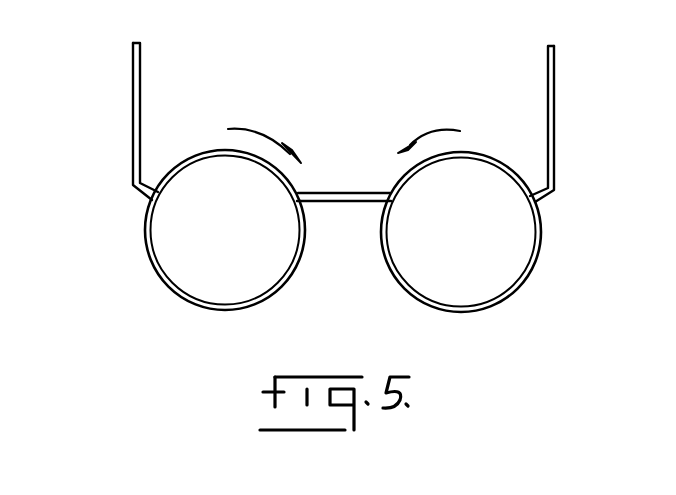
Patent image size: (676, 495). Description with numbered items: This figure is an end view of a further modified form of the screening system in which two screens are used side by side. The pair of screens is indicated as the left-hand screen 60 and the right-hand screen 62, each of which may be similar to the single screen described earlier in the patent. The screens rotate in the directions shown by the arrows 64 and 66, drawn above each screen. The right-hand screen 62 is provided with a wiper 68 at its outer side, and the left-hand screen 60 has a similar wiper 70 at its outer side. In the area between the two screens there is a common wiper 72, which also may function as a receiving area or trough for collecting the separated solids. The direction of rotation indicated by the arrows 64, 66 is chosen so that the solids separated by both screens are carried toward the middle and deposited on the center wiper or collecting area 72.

The left-hand screen 60 is at (205, 310).
The right-hand screen 62 is at (490, 308).
The arrow 64 is at (252, 130).
The arrow 66 is at (438, 131).
The wiper 68 is at (554, 98).
The wiper 70 is at (133, 102).
The common wiper 72 is at (352, 199).